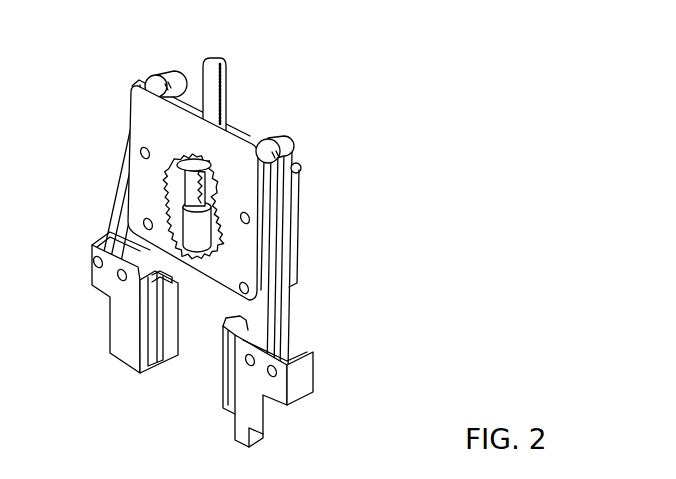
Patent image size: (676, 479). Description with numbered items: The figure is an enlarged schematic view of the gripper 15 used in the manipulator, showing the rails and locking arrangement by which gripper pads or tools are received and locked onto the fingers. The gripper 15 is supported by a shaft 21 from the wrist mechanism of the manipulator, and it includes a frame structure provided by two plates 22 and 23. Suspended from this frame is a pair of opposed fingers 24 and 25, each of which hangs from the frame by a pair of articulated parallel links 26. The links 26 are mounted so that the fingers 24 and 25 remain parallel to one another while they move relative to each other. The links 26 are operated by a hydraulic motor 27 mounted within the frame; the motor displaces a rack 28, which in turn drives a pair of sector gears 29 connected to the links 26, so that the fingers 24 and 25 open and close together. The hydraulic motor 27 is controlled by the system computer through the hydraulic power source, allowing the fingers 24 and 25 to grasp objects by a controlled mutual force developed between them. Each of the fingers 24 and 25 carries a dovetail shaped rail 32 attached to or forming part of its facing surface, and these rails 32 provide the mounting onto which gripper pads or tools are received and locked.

The gripper 15 is at (206, 243).
The shaft 21 is at (229, 88).
The plate 22 is at (301, 166).
The plate 23 is at (129, 110).
The finger 24 is at (89, 294).
The finger 25 is at (319, 377).
The articulated parallel links 26 is at (113, 205).
The hydraulic motor 27 is at (203, 232).
The rack 28 is at (201, 162).
The sector gears 29 is at (173, 165).
The dovetail shaped rail 32 is at (128, 364).